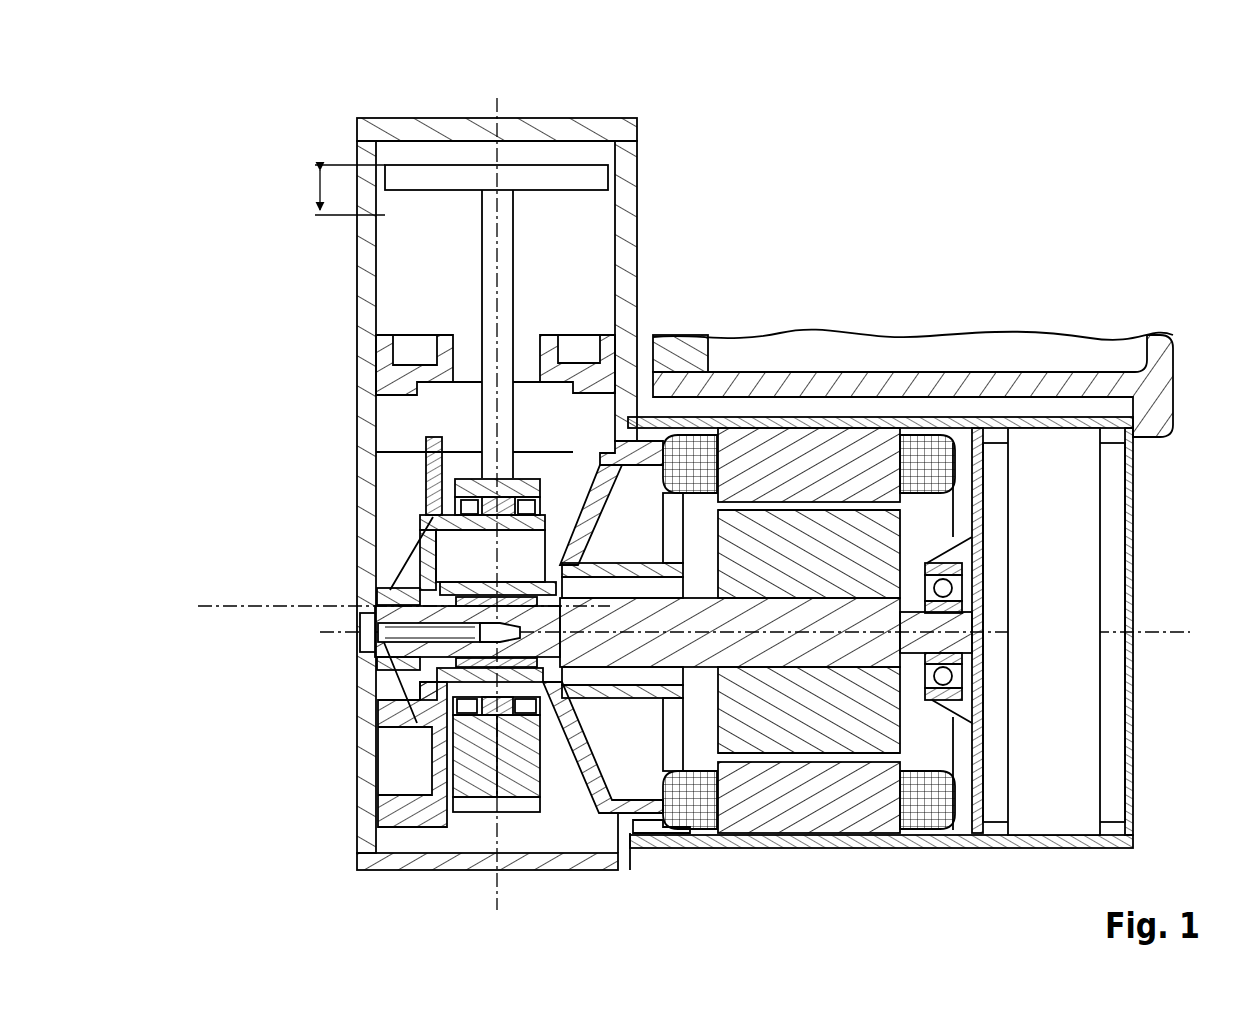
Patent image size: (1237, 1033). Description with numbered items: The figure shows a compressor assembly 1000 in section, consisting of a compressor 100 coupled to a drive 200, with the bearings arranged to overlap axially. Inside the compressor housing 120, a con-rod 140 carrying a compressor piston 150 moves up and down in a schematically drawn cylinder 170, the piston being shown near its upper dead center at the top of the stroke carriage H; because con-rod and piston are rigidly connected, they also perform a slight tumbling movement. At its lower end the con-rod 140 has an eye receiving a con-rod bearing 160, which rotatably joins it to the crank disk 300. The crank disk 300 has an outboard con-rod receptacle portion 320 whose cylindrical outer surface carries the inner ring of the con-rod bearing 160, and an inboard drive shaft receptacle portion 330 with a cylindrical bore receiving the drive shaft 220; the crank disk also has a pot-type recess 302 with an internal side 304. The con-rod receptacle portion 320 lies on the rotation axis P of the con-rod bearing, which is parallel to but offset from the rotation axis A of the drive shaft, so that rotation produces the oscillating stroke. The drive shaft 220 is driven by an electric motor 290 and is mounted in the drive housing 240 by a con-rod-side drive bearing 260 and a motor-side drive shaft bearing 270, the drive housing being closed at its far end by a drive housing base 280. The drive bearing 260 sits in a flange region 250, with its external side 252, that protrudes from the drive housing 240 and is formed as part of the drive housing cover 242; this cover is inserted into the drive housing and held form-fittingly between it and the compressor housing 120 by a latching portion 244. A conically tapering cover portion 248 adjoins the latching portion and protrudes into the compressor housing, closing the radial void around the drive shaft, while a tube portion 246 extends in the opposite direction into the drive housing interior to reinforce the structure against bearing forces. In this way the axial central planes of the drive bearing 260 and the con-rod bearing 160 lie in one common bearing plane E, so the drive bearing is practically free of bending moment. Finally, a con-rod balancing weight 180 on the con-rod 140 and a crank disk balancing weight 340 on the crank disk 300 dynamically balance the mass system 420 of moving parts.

The compressor assembly 1000 is at (953, 158).
The compressor 100 is at (370, 103).
The compressor housing 120 is at (406, 508).
The con-rod 140 is at (480, 311).
The compressor piston 150 is at (415, 165).
The con-rod bearing 160 is at (472, 733).
The cylinder 170 is at (467, 127).
The con-rod balancing weight 180 is at (485, 738).
The drive 200 is at (1027, 305).
The drive shaft 220 is at (440, 700).
The drive housing 240 is at (757, 426).
The drive housing cover 242 is at (562, 742).
The latching portion 244 is at (667, 835).
The tube portion 246 is at (610, 705).
The cover portion 248 is at (552, 497).
The flange region 250 is at (522, 680).
The external side of the flange region 252 is at (475, 599).
The drive bearing 260 is at (484, 712).
The motor-side drive shaft bearing 270 is at (950, 672).
The drive housing base 280 is at (978, 835).
The electric motor 290 is at (822, 419).
The crank disk 300 is at (465, 532).
The pot-type recess of the crank disk 302 is at (467, 558).
The internal side of the pot-type recess 304 is at (428, 526).
The con-rod receptacle portion 320 is at (540, 478).
The drive shaft receptacle portion 330 is at (393, 637).
The crank disk balancing weight 340 is at (397, 773).
The mass system 420 is at (237, 433).
The rotation axis of the drive shaft A is at (1177, 632).
The bearing plane E is at (490, 905).
The stroke carriage H is at (310, 178).
The rotation axis of the con-rod bearing P is at (208, 605).